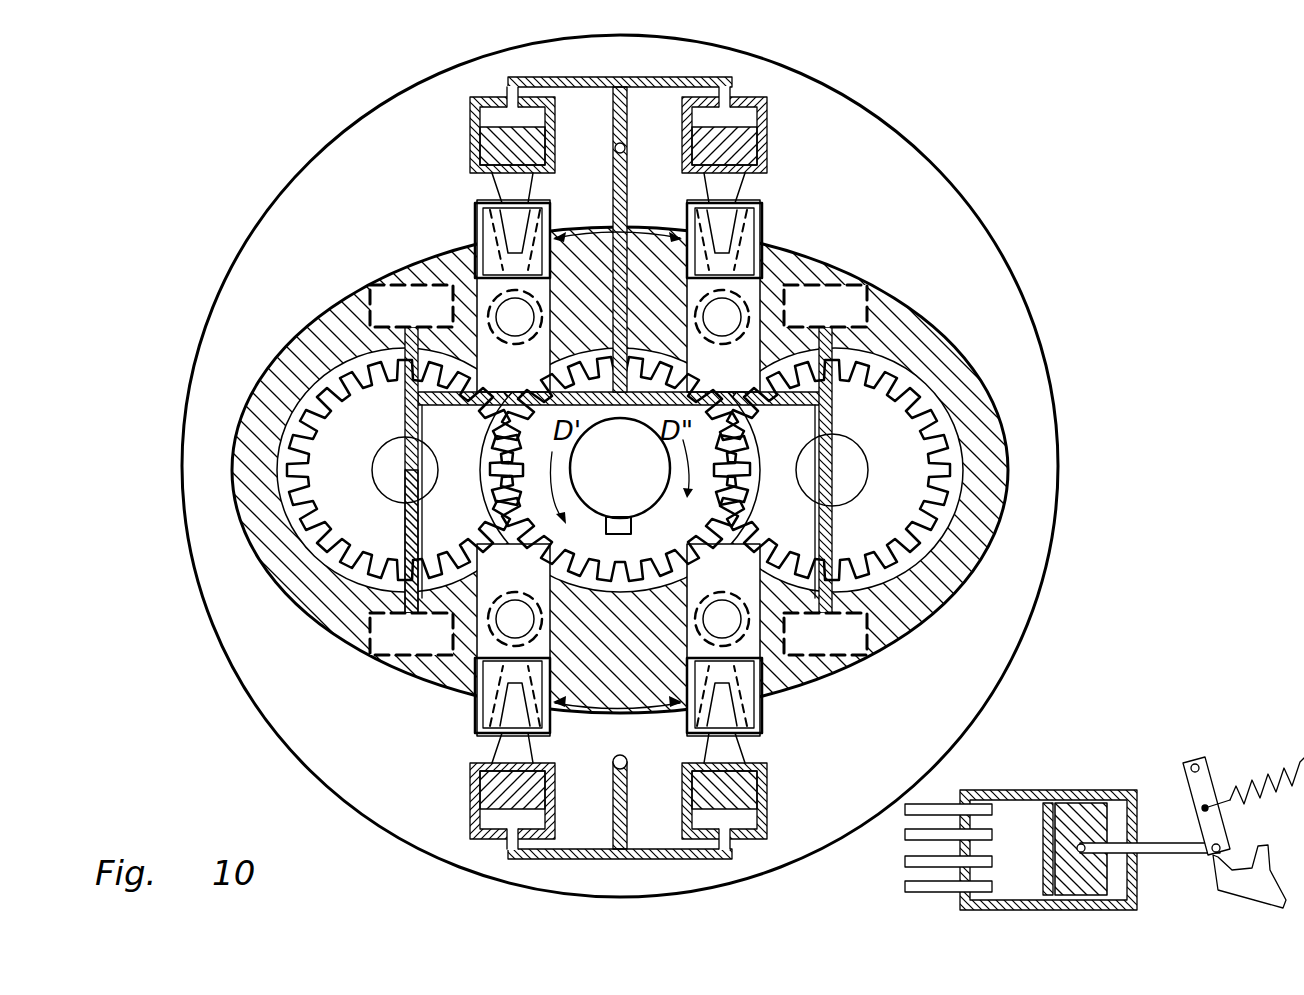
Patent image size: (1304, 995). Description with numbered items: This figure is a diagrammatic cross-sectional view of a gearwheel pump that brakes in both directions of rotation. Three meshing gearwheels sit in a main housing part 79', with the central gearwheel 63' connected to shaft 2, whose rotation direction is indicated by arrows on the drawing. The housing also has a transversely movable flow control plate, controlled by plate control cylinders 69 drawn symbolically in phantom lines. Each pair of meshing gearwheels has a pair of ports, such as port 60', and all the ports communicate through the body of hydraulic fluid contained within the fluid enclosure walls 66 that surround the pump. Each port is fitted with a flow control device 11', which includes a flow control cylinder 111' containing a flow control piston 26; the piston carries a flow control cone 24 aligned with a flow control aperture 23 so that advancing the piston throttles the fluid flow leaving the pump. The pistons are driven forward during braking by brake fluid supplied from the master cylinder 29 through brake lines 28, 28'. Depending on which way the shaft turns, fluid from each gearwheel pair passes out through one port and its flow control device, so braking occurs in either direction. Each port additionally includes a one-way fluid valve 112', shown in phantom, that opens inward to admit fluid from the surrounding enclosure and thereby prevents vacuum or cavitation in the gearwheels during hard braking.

The shaft 2 is at (632, 478).
The flow control device 11' is at (402, 455).
The flow control aperture 23 is at (586, 238).
The flow control cone 24 is at (496, 187).
The flow control piston 26 is at (502, 118).
The brake line 28 is at (736, 483).
The brake line 28' is at (619, 469).
The master cylinder 29 is at (1000, 790).
The port 60' is at (618, 599).
The gearwheel 63' is at (620, 469).
The fluid enclosure walls 66 is at (1010, 668).
The plate control cylinder 69 is at (412, 285).
The main housing part 79' is at (691, 468).
The flow control cylinder 111' is at (566, 444).
The one-way fluid valve 112' is at (297, 596).